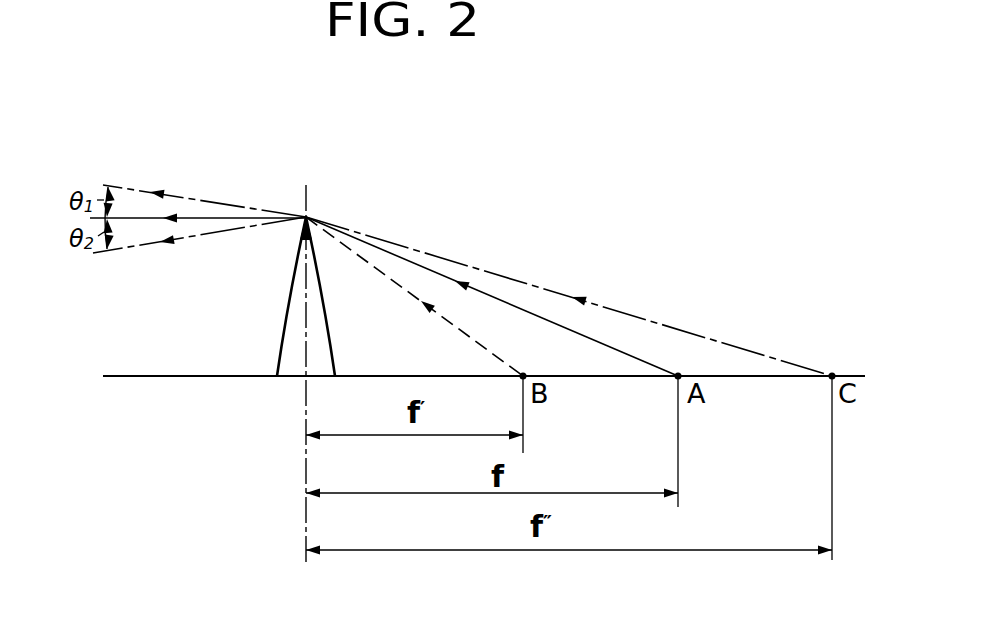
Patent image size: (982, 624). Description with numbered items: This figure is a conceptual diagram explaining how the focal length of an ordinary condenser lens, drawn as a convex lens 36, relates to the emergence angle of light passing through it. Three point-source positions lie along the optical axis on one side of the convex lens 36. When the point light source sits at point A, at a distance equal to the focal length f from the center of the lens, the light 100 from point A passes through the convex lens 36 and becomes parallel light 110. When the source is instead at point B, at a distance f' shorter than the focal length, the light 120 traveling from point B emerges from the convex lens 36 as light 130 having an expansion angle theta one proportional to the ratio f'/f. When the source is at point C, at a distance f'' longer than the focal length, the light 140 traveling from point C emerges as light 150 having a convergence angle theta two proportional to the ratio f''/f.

The convex lens 36 is at (287, 318).
The light from point A 100 is at (490, 293).
The parallel light 110 is at (138, 218).
The light traveling from point B 120 is at (447, 323).
The light having expansion angle θ1 130 is at (232, 202).
The light traveling from point C 140 is at (670, 320).
The light having convergence angle θ2 150 is at (123, 252).